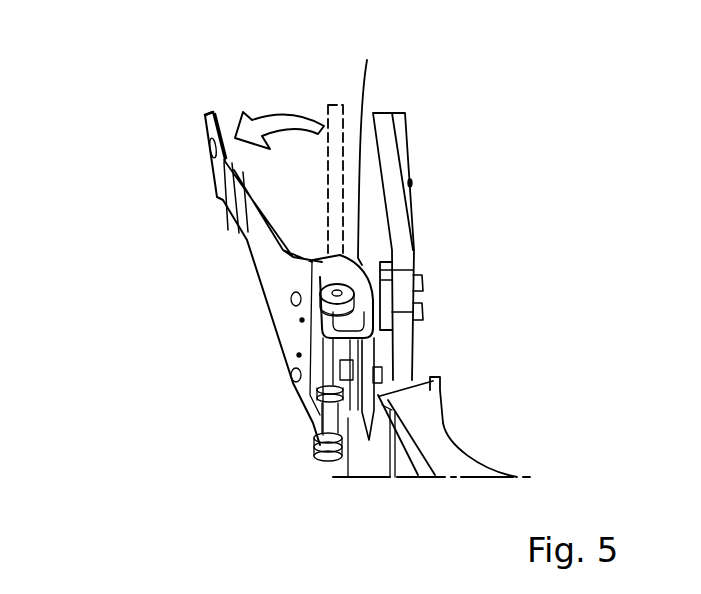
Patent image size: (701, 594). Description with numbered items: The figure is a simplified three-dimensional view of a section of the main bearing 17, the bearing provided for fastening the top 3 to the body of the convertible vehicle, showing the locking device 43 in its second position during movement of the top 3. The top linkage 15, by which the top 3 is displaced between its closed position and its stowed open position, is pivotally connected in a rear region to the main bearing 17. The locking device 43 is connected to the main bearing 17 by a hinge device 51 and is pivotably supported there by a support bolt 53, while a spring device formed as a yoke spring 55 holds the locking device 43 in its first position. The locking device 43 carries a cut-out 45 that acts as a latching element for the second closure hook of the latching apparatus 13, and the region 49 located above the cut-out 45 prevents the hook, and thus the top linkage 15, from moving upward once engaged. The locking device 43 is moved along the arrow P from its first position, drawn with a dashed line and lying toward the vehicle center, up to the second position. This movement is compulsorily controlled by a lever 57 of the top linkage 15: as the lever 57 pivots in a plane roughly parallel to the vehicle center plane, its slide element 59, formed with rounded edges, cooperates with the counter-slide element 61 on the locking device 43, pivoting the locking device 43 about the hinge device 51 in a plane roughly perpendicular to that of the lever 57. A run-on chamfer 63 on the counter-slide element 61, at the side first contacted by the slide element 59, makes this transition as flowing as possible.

The top 3 is at (155, 101).
The latching apparatus 13 is at (216, 199).
The top linkage 15 is at (414, 170).
The main bearing 17 is at (443, 455).
The locking device 43 is at (263, 273).
The cut-out 45 is at (206, 150).
The region above the cut-out 49 is at (212, 111).
The hinge device 51 is at (313, 447).
The support bolt 53 is at (330, 423).
The yoke spring 55 is at (320, 392).
The lever 57 is at (397, 218).
The slide element 59 is at (388, 313).
The counter-slide element 61 is at (383, 153).
The run-on chamfer 63 is at (400, 270).
The arrow P is at (277, 128).